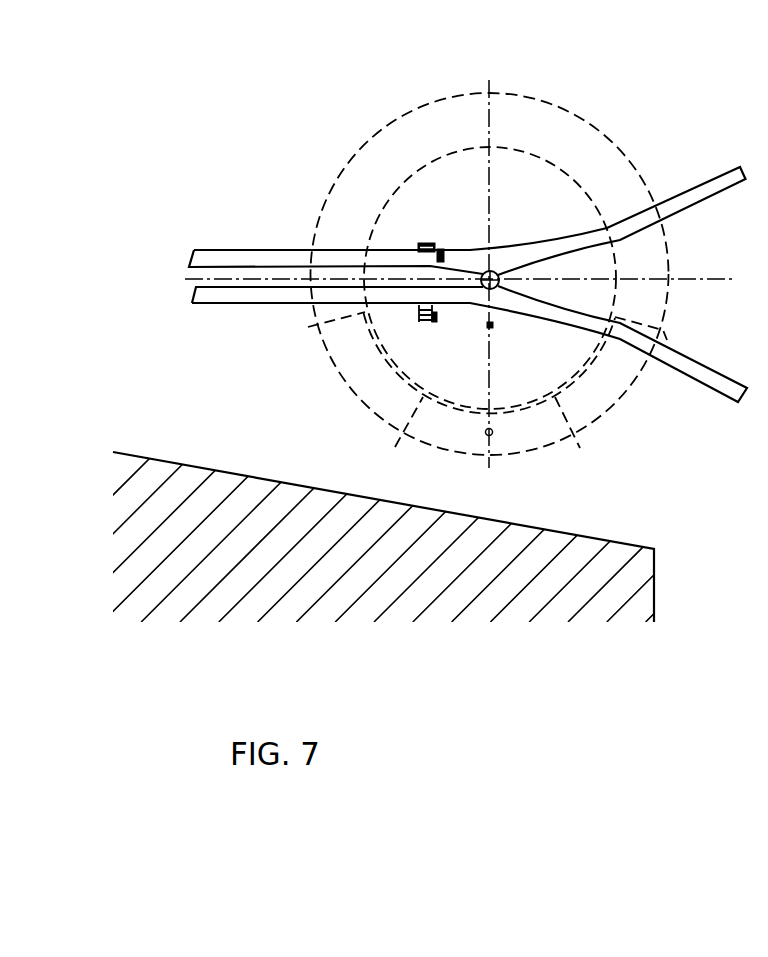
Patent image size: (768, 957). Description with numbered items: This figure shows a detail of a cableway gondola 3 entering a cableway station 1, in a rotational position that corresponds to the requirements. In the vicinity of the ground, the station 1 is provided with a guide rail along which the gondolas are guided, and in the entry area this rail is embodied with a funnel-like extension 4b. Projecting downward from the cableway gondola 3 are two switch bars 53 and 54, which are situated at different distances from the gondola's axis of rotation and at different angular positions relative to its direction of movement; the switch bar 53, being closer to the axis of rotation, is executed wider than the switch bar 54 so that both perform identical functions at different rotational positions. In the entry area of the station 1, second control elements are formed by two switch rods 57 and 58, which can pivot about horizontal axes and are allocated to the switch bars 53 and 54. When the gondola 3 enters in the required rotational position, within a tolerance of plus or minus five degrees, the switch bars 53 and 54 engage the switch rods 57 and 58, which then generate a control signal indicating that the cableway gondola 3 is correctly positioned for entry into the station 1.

The cableway station 1 is at (383, 662).
The cableway gondola 3 is at (560, 108).
The funnel-like extension 4b is at (695, 193).
The switch bar 53 is at (443, 252).
The switch bar 54 is at (493, 327).
The switch rod 57 is at (417, 245).
The switch rod 58 is at (420, 322).